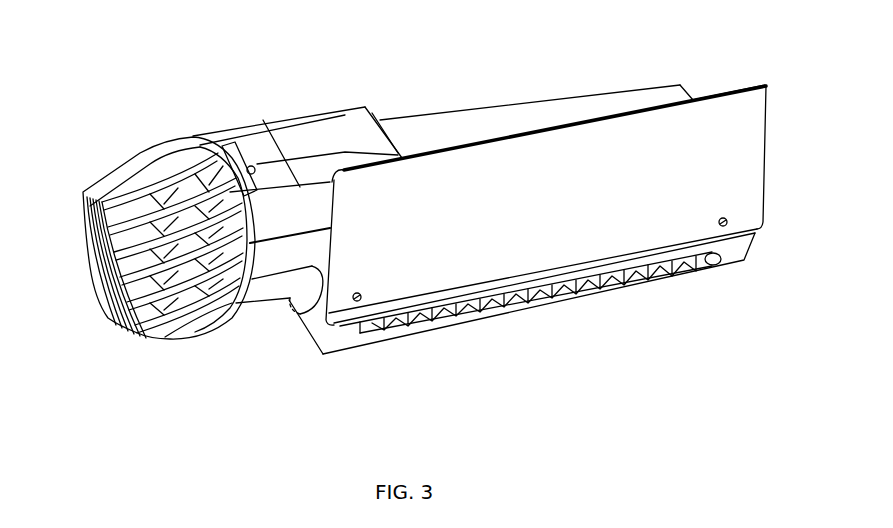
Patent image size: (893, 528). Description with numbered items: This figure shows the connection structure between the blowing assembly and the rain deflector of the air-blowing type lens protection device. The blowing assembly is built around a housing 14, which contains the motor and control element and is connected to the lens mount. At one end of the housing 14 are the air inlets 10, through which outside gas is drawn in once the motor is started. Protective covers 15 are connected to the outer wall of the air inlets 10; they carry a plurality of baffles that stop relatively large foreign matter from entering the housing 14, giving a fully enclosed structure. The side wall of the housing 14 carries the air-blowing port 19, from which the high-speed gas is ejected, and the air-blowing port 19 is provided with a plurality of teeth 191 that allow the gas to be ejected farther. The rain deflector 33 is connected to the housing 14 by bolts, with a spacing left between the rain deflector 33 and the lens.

The air inlets 10 is at (132, 340).
The housing 14 is at (417, 130).
The protective covers 15 is at (117, 197).
The air-blowing port 19 is at (390, 339).
The teeth 191 is at (487, 319).
The rain deflector 33 is at (519, 229).